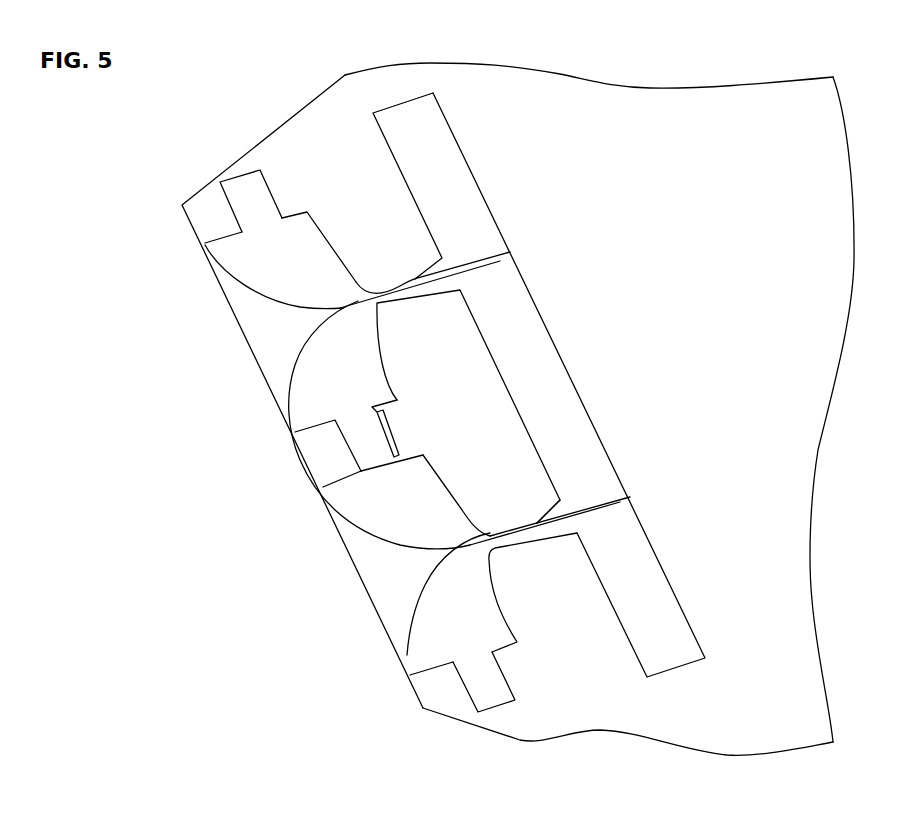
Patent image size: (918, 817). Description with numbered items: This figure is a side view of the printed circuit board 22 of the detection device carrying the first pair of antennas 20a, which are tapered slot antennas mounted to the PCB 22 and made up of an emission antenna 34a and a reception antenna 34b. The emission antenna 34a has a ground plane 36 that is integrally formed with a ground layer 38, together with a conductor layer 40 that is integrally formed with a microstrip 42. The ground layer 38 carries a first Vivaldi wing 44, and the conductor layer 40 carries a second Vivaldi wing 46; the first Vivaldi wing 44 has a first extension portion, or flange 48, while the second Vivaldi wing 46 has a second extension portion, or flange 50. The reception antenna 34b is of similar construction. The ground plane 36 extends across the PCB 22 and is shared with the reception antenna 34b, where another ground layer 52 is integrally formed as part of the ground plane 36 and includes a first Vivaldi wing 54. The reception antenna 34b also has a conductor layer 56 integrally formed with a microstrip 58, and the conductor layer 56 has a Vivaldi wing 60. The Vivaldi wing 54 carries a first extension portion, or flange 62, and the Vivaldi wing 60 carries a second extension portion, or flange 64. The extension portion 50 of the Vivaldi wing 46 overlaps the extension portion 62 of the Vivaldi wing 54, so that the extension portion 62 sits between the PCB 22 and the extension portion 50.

The first pair of antennas 20a is at (176, 565).
The printed circuit board 22 is at (787, 380).
The emission antenna 34a is at (210, 326).
The reception antenna 34b is at (318, 605).
The ground plane 36 is at (427, 125).
The ground layer 38 is at (250, 266).
The conductor layer 40 is at (310, 402).
The microstrip 42 is at (498, 260).
The first Vivaldi wing 44 is at (305, 227).
The second Vivaldi wing 46 is at (376, 368).
The first extension portion 48 is at (255, 190).
The second extension portion 50 is at (368, 433).
The ground layer 52 is at (368, 513).
The first Vivaldi wing 54 is at (458, 512).
The conductor layer 56 is at (418, 655).
The microstrip 58 is at (628, 499).
The Vivaldi wing 60 is at (492, 620).
The first extension portion 62 is at (400, 455).
The second extension portion 64 is at (493, 692).